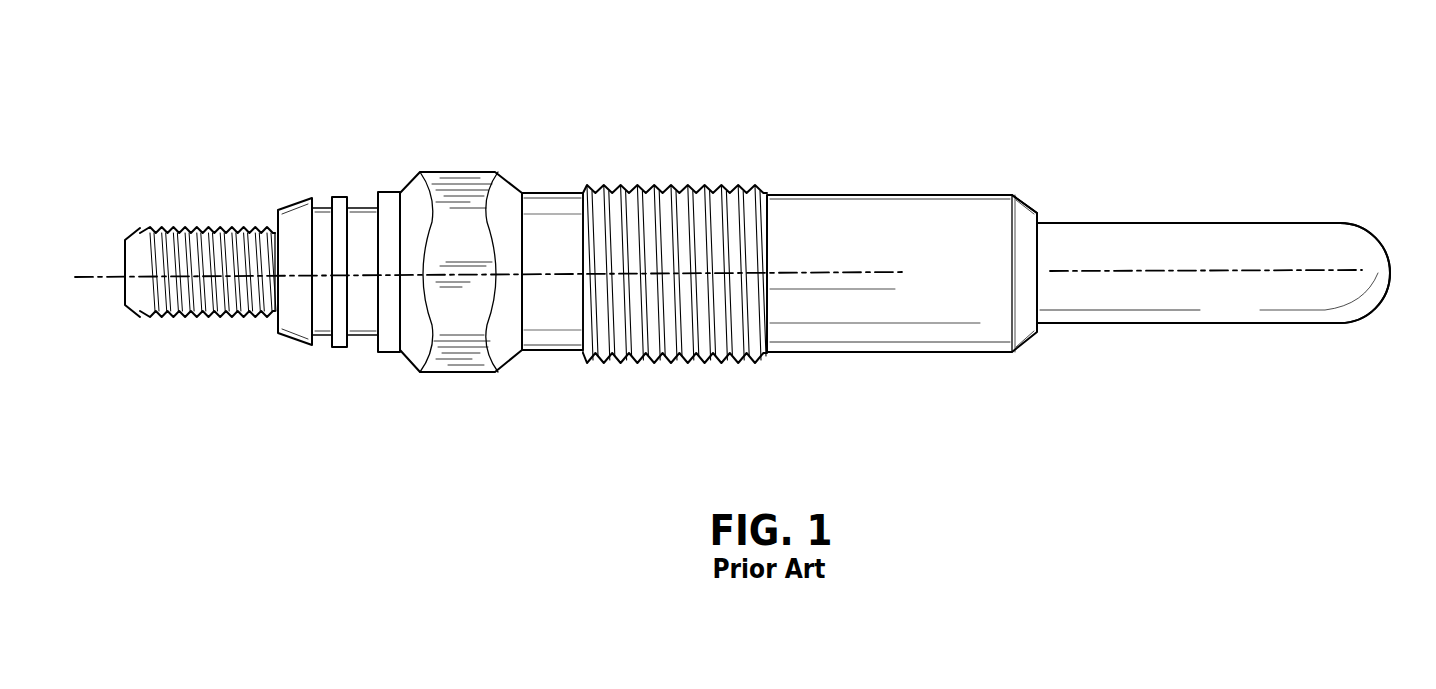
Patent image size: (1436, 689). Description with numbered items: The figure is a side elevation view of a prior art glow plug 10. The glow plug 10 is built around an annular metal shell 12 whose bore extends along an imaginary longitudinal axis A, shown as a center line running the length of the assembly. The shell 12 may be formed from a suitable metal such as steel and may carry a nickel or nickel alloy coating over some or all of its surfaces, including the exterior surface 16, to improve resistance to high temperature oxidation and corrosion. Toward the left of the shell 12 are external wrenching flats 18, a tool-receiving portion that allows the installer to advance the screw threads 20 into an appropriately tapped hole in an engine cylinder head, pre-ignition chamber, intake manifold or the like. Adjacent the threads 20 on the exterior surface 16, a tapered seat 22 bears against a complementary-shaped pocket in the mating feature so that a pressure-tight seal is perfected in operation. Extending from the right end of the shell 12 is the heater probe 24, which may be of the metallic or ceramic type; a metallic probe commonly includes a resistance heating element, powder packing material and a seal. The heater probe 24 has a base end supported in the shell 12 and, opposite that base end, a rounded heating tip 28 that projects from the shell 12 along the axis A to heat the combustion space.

The glow plug 10 is at (1090, 105).
The shell 12 is at (551, 189).
The exterior surface 16 is at (773, 197).
The external wrenching flats 18 is at (463, 178).
The screw threads 20 is at (668, 360).
The tapered seat 22 is at (1022, 212).
The heater probe 24 is at (1257, 329).
The heating tip 28 is at (1393, 273).
The longitudinal axis A is at (102, 277).